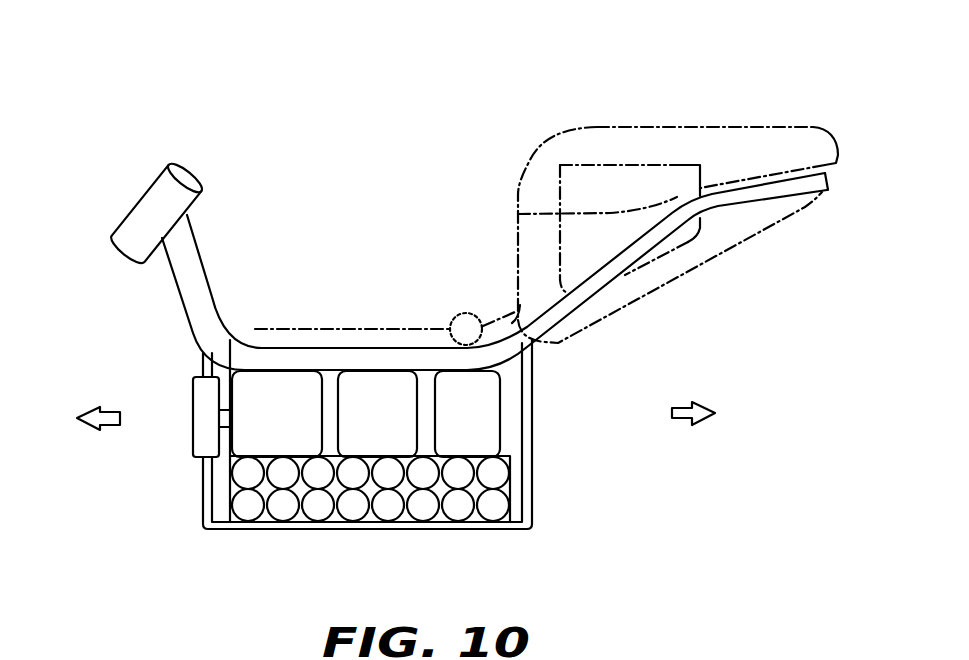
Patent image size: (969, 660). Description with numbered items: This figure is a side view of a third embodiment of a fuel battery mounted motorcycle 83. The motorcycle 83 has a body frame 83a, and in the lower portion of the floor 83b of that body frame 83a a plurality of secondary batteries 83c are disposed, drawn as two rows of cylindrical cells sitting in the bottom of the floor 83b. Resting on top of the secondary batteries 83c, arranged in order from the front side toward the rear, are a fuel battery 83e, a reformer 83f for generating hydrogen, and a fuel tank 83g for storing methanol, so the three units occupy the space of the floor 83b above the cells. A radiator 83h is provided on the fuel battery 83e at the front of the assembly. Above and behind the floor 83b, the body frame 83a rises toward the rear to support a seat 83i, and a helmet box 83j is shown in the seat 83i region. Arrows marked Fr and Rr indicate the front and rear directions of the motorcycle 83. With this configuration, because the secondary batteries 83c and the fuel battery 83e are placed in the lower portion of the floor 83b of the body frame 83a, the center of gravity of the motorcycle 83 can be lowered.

The fuel battery mounted motorcycle 83 is at (240, 107).
The body frame 83a is at (208, 293).
The floor 83b is at (218, 513).
The secondary batteries 83c is at (492, 503).
The fuel battery 83e is at (272, 387).
The reformer 83f is at (370, 387).
The fuel tank 83g is at (480, 412).
The radiator 83h is at (207, 400).
The seat 83i is at (618, 127).
The helmet box 83j is at (657, 163).